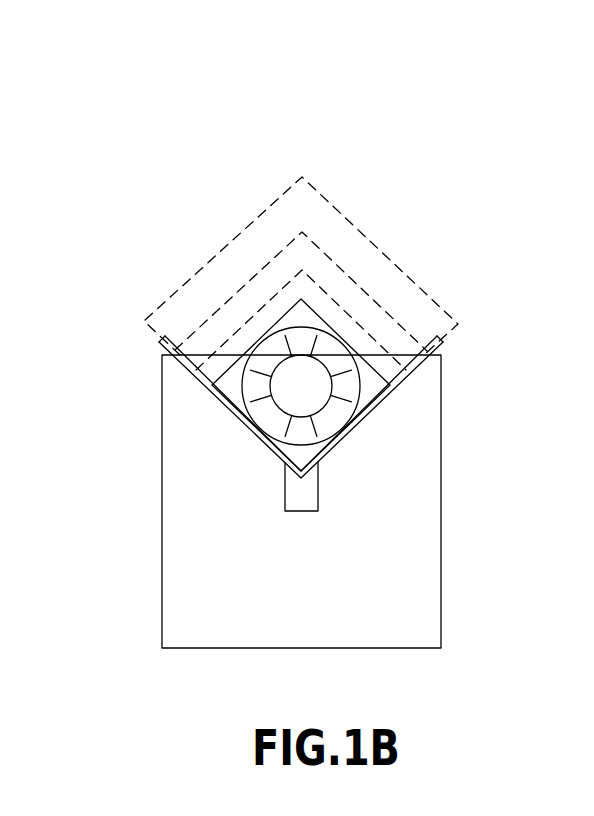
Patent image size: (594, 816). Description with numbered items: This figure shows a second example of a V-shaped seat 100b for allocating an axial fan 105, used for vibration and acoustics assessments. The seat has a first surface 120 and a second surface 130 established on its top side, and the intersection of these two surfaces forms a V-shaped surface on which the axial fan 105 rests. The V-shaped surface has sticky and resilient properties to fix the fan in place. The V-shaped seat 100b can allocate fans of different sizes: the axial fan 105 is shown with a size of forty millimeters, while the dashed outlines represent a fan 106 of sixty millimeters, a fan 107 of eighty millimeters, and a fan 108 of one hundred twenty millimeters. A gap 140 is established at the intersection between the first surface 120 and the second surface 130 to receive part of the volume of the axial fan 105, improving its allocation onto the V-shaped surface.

The V-shaped seat 100b is at (158, 56).
The axial fan 105 is at (373, 366).
The fan of 60 mm size 106 is at (337, 303).
The fan of 80 mm size 107 is at (322, 250).
The fan of 120 mm size 108 is at (318, 193).
The first surface 120 is at (200, 387).
The second surface 130 is at (392, 400).
The gap 140 is at (285, 487).